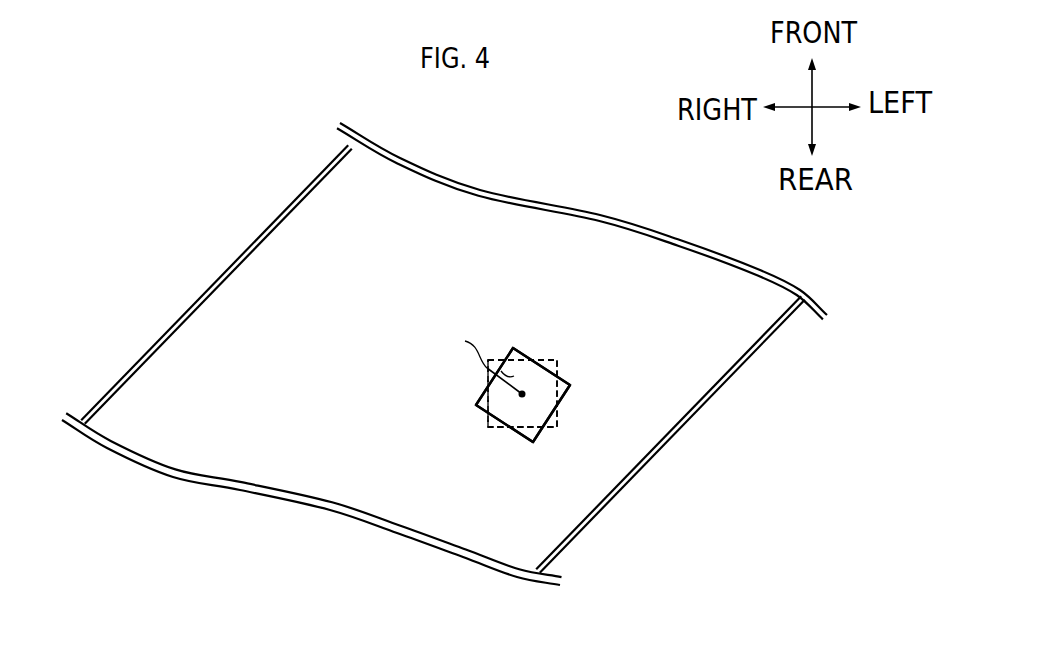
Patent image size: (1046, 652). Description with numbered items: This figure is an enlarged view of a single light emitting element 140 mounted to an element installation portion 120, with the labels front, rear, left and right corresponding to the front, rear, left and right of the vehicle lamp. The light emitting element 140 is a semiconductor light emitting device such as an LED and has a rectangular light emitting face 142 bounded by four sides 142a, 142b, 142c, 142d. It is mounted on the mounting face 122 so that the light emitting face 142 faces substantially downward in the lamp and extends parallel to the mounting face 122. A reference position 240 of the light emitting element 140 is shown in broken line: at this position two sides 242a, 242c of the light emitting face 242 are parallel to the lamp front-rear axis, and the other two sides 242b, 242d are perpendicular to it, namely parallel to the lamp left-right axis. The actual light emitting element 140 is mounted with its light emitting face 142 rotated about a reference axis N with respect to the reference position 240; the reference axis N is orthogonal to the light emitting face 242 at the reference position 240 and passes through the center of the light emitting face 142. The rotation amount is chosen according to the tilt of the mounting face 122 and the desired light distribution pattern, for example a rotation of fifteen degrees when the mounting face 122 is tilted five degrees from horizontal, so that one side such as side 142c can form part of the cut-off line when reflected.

The plate member 120 is at (681, 436).
The mounting face 122 is at (247, 294).
The light emitting element 140 is at (513, 345).
The light emitting face 142 is at (498, 365).
The side of the light emitting face 142a is at (484, 392).
The side of the light emitting face 142b is at (525, 356).
The side of the light emitting face 142c is at (566, 392).
The side of the light emitting face 142d is at (480, 409).
The reference axis N is at (466, 346).
The reference position 240 is at (562, 357).
The light emitting face at the reference position 242 is at (563, 428).
The side of the light emitting face at the reference position 242a is at (487, 426).
The side of the light emitting face at the reference position 242b is at (547, 358).
The side of the light emitting face at the reference position 242c is at (558, 416).
The side of the light emitting face at the reference position 242d is at (500, 430).